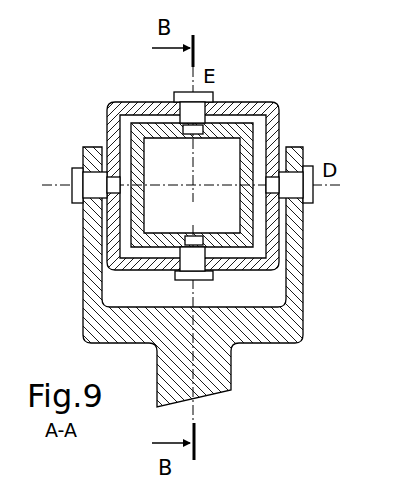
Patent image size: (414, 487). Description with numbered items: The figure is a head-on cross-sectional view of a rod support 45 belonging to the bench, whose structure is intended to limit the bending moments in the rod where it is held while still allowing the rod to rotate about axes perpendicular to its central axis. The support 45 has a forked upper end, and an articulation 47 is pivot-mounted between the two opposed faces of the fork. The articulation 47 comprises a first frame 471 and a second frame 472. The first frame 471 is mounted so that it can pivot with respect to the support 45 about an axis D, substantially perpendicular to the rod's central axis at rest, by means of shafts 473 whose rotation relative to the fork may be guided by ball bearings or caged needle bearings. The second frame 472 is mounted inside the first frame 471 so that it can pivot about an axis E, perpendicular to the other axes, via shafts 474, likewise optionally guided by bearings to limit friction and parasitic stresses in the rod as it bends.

The articulation 47 is at (114, 72).
The support 45 is at (92, 324).
The first frame 471 is at (244, 101).
The second frame 472 is at (145, 198).
The shafts 473 is at (72, 198).
The shafts 474 is at (200, 262).